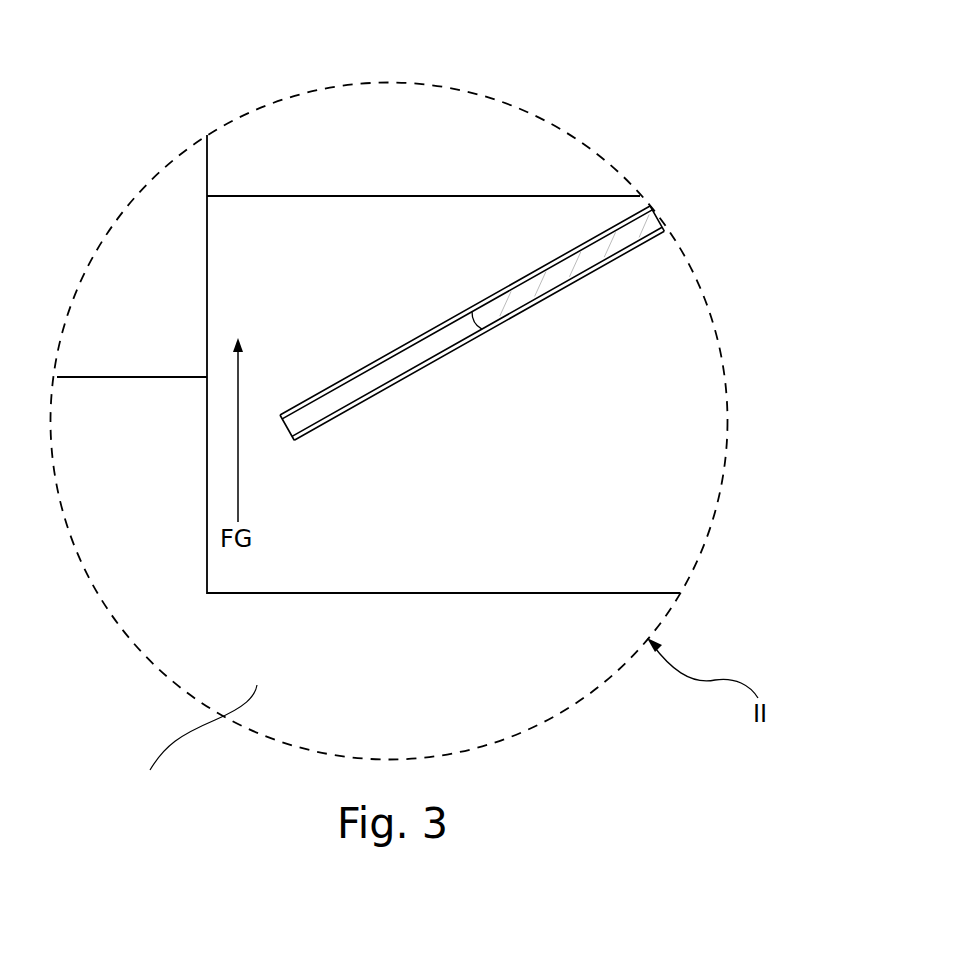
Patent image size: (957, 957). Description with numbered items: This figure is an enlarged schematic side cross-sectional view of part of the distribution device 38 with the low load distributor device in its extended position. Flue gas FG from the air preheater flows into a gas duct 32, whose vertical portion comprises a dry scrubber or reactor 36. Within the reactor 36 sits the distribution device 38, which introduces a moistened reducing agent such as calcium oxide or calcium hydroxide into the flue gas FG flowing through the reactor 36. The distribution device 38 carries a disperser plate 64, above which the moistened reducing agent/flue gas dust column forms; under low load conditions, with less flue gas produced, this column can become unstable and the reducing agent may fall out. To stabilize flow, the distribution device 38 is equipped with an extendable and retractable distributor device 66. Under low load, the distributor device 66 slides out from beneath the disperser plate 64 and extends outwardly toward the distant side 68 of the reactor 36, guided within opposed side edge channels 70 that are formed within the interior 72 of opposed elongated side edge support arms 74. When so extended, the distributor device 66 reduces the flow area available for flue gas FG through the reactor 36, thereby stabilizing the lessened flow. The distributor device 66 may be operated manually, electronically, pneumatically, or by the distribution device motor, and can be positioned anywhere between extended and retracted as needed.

The gas duct 32 is at (196, 738).
The reactor 36 is at (363, 107).
The distribution device 38 is at (668, 320).
The disperser plate 64 is at (477, 295).
The extendable and retractable distributor device 66 is at (375, 378).
The distant side 68 is at (207, 360).
The side edge channels 70 is at (492, 317).
The interior 72 is at (318, 427).
The side edge support arms 74 is at (308, 402).